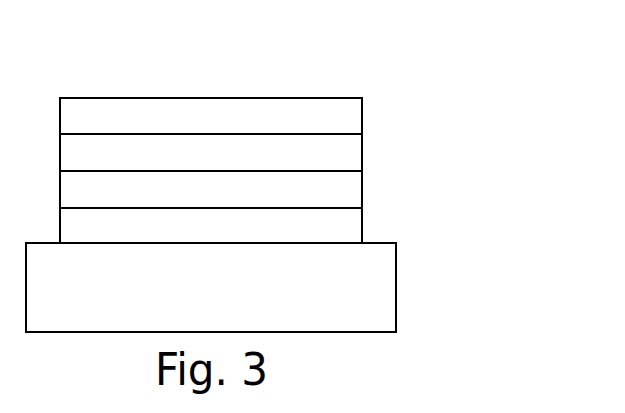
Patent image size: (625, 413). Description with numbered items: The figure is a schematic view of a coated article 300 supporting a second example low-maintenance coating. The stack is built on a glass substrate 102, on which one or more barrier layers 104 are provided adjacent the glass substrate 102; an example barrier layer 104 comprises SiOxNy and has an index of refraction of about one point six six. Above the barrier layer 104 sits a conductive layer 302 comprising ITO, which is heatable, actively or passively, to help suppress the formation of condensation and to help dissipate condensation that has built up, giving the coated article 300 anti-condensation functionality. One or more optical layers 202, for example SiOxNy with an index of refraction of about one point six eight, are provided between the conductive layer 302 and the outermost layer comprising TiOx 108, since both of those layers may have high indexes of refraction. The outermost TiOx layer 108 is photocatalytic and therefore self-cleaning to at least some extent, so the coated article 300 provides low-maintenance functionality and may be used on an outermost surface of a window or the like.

The coated article 300 is at (458, 50).
The glass substrate 102 is at (396, 288).
The barrier layer 104 is at (362, 225).
The conductive layer 302 is at (362, 188).
The optical layer 202 is at (362, 152).
The layer comprising TiOx 108 is at (362, 116).